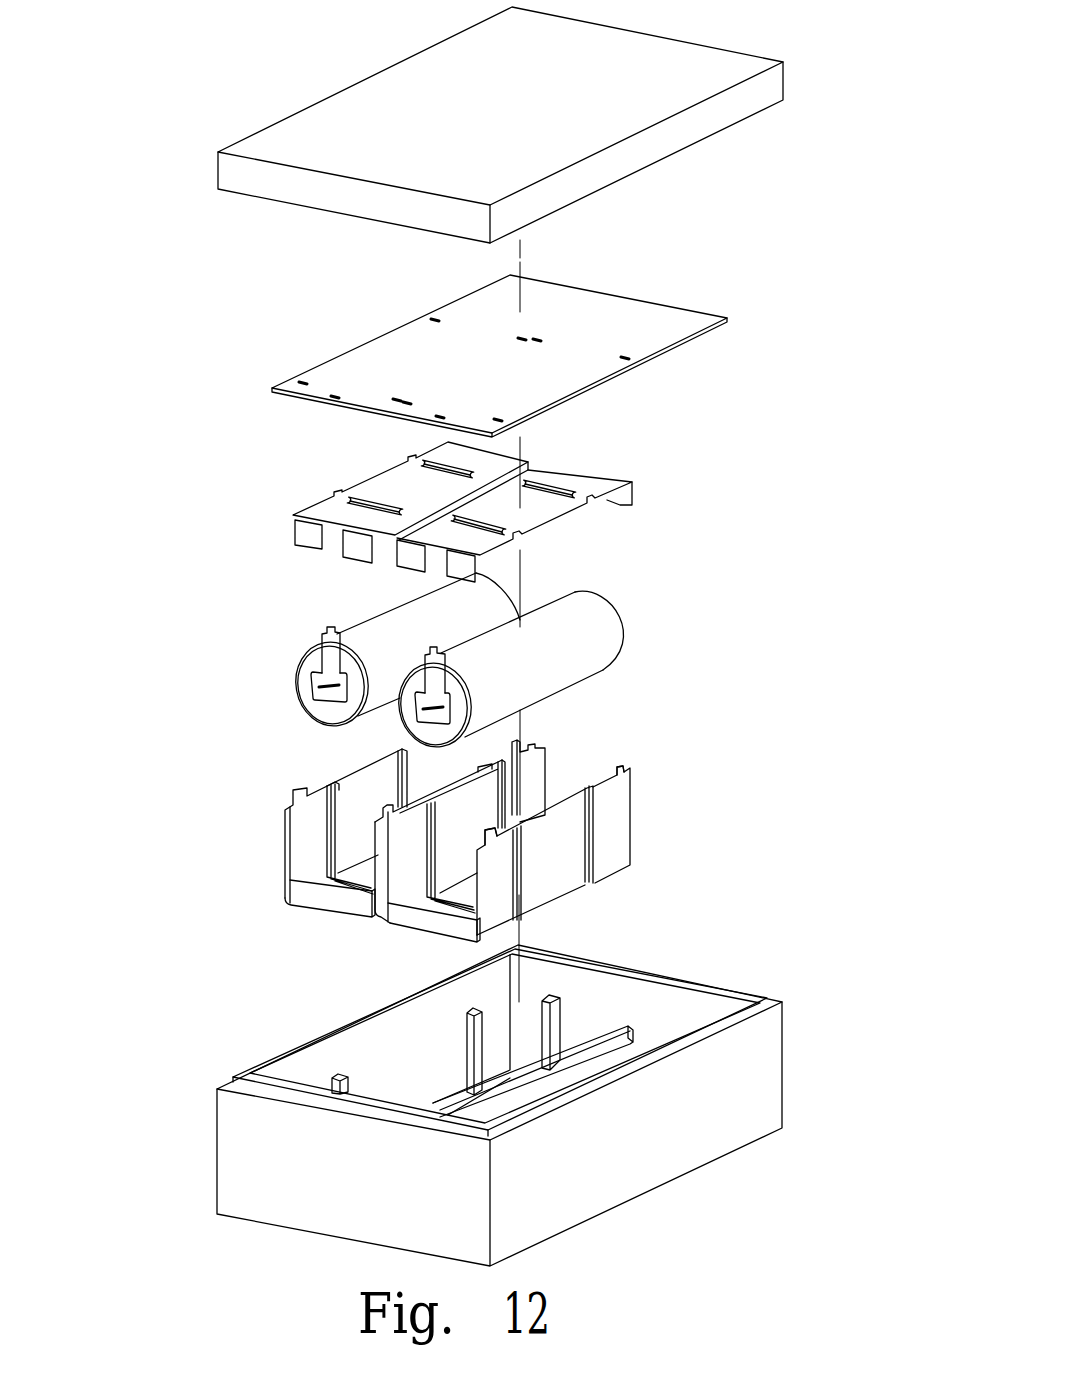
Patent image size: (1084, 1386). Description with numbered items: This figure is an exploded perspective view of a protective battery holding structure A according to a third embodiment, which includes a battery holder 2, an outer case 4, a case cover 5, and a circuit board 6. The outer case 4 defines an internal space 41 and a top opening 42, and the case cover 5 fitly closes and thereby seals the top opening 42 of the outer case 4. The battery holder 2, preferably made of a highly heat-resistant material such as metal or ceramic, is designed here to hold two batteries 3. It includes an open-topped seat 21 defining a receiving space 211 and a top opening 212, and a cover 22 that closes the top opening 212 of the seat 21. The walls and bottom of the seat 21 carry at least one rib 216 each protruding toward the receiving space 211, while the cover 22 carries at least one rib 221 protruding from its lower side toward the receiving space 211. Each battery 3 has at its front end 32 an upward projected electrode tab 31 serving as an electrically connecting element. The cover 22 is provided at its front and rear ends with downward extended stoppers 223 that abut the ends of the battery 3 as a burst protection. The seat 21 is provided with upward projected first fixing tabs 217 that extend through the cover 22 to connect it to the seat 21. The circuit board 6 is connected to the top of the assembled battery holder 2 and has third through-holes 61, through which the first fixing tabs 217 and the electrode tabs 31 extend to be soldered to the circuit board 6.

The case cover 5 is at (678, 57).
The circuit board 6 is at (498, 356).
The third through-holes 61 is at (626, 360).
The cover 22 is at (481, 517).
The rib 221 is at (548, 495).
The stopper 223 is at (407, 555).
The battery 3 is at (444, 653).
The electrode tab 31 is at (323, 631).
The front end 32 is at (305, 675).
The battery holder 2 is at (454, 833).
The seat 21 is at (454, 833).
The receiving space 211 is at (457, 853).
The top opening 212 is at (408, 857).
The rib 216 is at (583, 788).
The first fixing tab 217 is at (620, 762).
The outer case 4 is at (501, 1078).
The internal space 41 is at (677, 1015).
The top opening 42 is at (633, 988).
The protective battery holding structure A is at (749, 612).